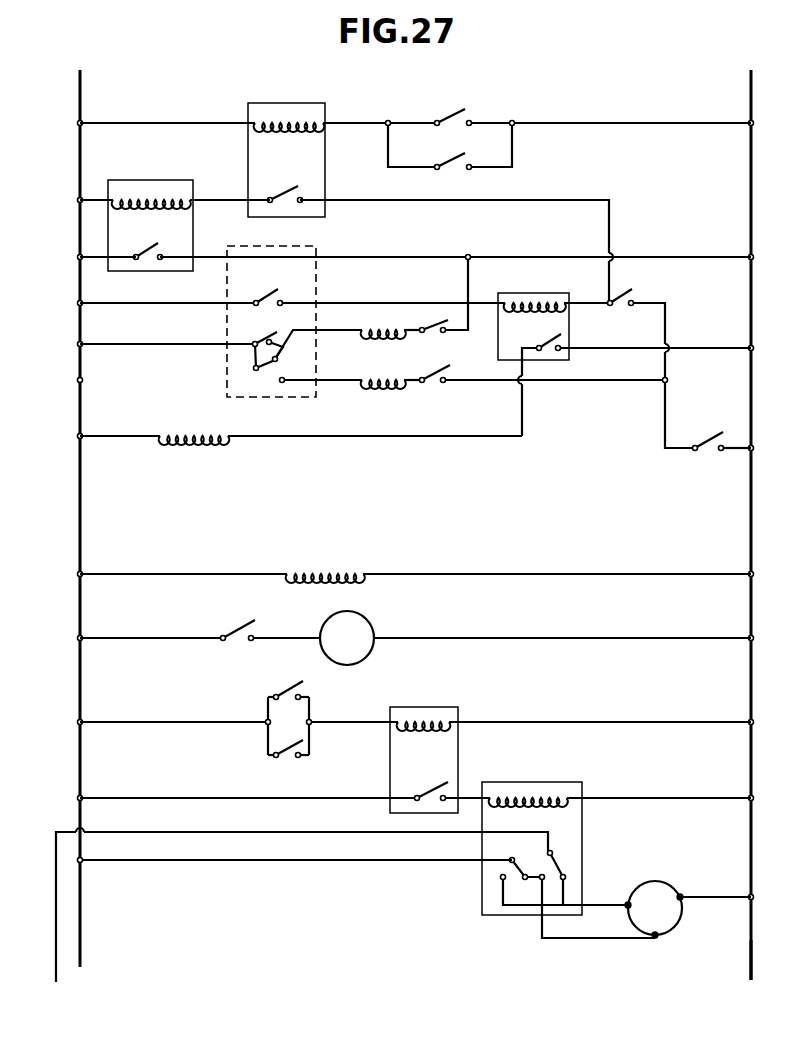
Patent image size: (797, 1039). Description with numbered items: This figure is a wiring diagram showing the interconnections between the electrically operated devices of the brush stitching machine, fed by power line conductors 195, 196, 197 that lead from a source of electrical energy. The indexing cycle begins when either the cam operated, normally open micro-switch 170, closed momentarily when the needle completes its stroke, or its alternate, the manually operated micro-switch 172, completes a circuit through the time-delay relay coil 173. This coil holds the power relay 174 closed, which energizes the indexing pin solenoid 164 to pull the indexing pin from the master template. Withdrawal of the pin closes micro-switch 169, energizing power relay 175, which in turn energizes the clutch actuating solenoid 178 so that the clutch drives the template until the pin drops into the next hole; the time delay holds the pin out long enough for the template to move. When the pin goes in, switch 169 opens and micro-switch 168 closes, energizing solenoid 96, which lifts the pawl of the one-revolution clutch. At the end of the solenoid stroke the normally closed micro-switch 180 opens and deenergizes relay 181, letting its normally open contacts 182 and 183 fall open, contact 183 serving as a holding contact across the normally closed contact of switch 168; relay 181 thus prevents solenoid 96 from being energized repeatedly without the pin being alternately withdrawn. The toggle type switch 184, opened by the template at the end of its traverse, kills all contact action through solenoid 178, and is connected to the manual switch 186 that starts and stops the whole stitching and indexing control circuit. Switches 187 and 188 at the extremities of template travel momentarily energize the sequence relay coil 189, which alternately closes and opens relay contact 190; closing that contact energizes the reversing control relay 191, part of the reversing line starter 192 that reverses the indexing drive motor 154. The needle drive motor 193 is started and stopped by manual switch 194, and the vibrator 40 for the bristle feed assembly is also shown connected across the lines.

The vibrator 40 is at (332, 572).
The solenoid 96 is at (364, 388).
The indexing drive motor 154 is at (655, 886).
The indexing pin solenoid 164 is at (271, 321).
The micro-switch 168 is at (276, 362).
The micro-switch 169 is at (284, 298).
The micro-switch 170 is at (448, 98).
The manually operated micro-switch 172 is at (434, 160).
The time-delay relay coil 173 is at (286, 160).
The power relay 174 is at (150, 225).
The power relay 175 is at (533, 326).
The clutch actuating solenoid 178 is at (169, 447).
The micro-switch 180 is at (434, 364).
The relay 181 is at (284, 322).
The relay contact 182 is at (250, 341).
The relay contact 183 is at (426, 385).
The toggle type switch 184 is at (618, 297).
The switch 186 is at (699, 442).
The switch 187 is at (304, 684).
The switch 188 is at (282, 760).
The sequence relay coil 189 is at (424, 760).
The relay contact 190 is at (446, 788).
The indexing drive motor reversing control relay 191 is at (550, 804).
The reversing line starter 192 is at (575, 861).
The motor 193 is at (358, 622).
The manual switch 194 is at (226, 633).
The power line conductor 195 is at (56, 905).
The power line conductor 196 is at (82, 905).
The power line conductor 197 is at (751, 966).